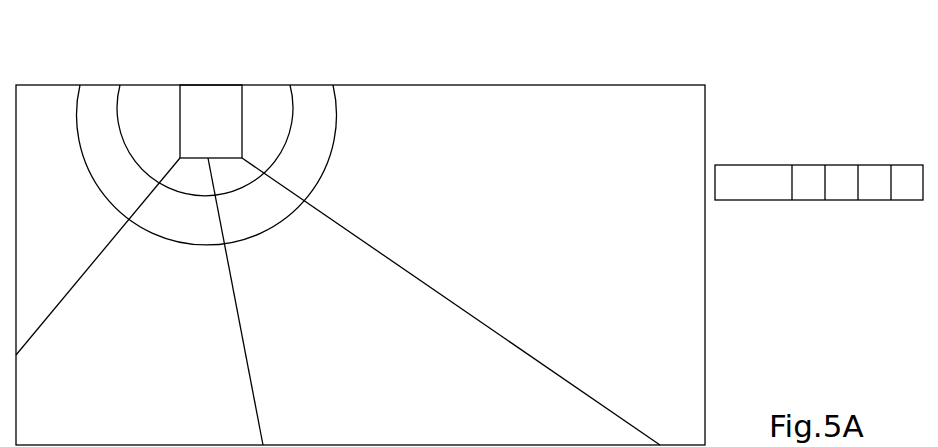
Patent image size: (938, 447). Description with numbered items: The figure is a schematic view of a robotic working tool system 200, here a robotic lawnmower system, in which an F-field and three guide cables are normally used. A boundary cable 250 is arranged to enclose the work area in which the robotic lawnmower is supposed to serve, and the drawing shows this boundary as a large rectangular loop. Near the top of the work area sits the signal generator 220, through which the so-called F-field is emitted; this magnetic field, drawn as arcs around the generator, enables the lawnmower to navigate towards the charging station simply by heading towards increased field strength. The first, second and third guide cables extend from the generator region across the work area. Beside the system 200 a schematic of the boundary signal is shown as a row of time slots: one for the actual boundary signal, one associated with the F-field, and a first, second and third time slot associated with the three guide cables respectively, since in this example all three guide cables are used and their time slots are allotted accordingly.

The robotic working tool system 200 is at (469, 232).
The signal generator 220 is at (222, 132).
The boundary cable 250 is at (560, 85).